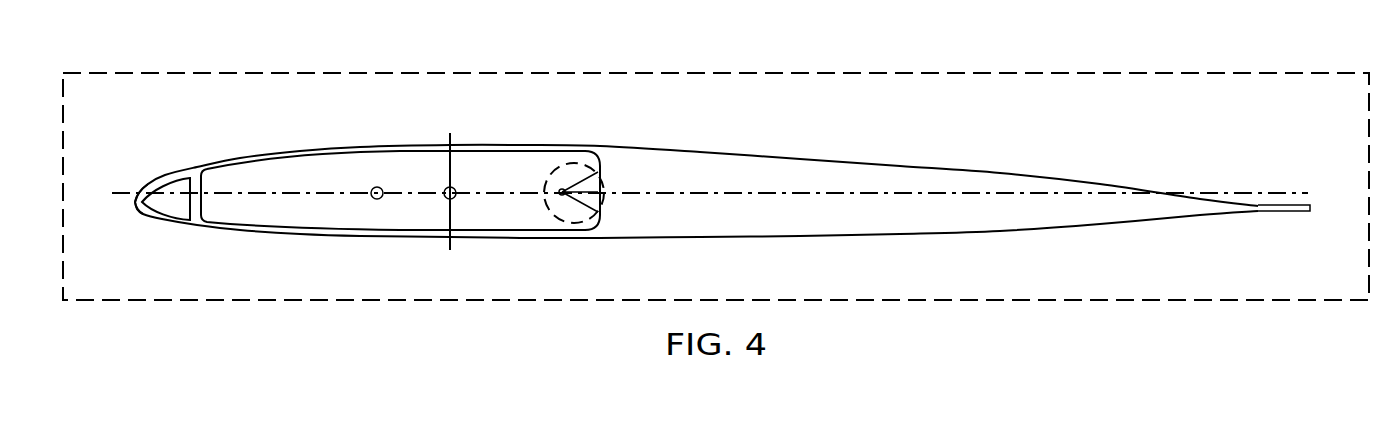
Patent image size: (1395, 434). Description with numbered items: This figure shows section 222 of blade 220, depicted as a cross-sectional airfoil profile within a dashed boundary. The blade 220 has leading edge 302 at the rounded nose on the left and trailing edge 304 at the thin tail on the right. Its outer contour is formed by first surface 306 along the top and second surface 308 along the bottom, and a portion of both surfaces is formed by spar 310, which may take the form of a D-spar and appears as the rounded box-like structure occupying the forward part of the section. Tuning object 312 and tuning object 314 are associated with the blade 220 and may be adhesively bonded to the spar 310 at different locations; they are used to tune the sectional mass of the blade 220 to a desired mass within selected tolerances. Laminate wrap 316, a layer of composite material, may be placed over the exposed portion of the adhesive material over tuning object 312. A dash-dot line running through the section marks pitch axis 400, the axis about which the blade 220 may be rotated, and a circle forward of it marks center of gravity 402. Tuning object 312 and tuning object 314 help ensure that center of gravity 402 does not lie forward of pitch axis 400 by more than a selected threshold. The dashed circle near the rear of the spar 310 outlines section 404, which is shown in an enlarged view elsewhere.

The blade 220 is at (709, 189).
The section 222 is at (828, 70).
The leading edge 302 is at (132, 216).
The trailing edge 304 is at (1314, 197).
The first surface 306 is at (482, 145).
The second surface 308 is at (688, 240).
The spar 310 is at (606, 218).
The tuning object 312 is at (580, 204).
The tuning object 314 is at (168, 204).
The laminate wrap 316 is at (559, 196).
The pitch axis 400 is at (450, 200).
The center of gravity 402 is at (375, 200).
The section 404 is at (567, 162).